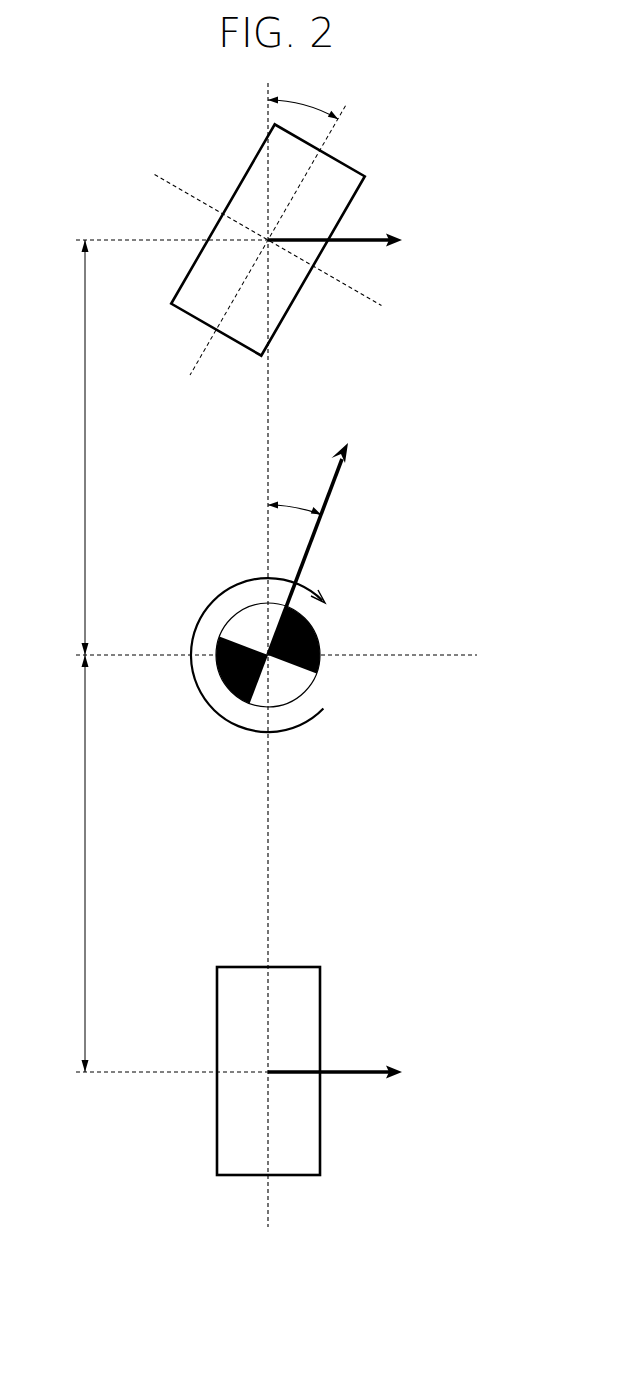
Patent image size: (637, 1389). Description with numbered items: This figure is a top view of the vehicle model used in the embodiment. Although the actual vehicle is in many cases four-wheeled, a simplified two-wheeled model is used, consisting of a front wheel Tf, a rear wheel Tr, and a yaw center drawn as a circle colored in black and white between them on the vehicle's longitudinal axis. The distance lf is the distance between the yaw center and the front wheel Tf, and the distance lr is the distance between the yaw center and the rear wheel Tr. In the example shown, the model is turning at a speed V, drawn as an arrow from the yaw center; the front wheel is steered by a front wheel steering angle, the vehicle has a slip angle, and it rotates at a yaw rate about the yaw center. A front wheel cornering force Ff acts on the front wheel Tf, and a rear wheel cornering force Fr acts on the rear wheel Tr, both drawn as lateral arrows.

The front wheel Tf is at (345, 160).
The front wheel cornering force Ff is at (349, 241).
The distance between the yaw center and the front wheel lf is at (73, 447).
The distance between the yaw center and the rear wheel lr is at (74, 863).
The speed V is at (318, 535).
The rear wheel cornering force Fr is at (349, 1073).
The rear wheel Tr is at (298, 1175).